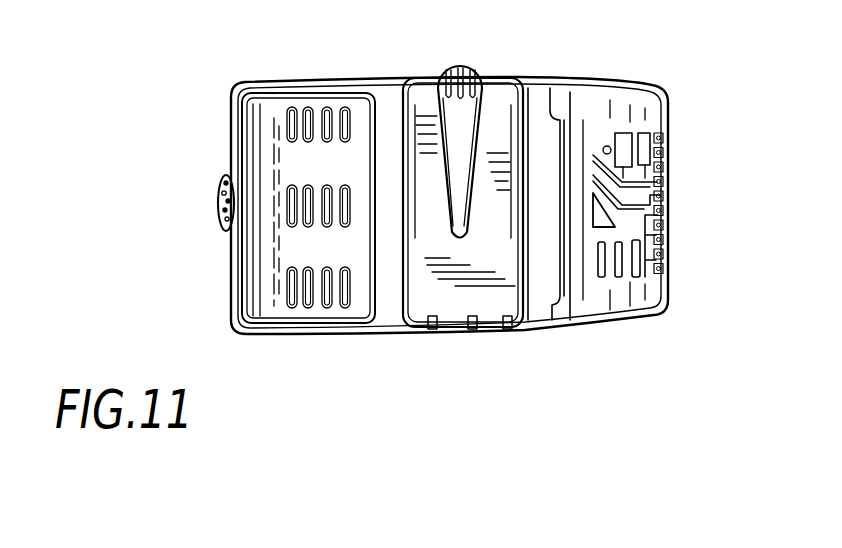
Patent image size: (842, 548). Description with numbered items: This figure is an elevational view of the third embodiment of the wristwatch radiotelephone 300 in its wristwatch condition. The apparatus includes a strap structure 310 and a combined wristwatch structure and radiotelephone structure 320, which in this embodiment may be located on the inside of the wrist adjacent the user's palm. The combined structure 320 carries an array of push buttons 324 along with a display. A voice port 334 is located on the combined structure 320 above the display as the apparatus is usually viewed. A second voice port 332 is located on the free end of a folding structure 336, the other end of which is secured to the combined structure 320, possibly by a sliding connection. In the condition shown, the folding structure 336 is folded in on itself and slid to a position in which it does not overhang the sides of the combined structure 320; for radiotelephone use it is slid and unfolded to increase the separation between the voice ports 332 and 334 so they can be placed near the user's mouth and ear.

The wristwatch radiotelephone 300 is at (777, 277).
The strap structure 310 is at (630, 100).
The combined wristwatch structure and radiotelephone structure 320 is at (335, 335).
The array of push buttons 324 is at (299, 108).
The voice port 332 is at (462, 66).
The voice port 334 is at (223, 214).
The folding structure 336 is at (477, 335).